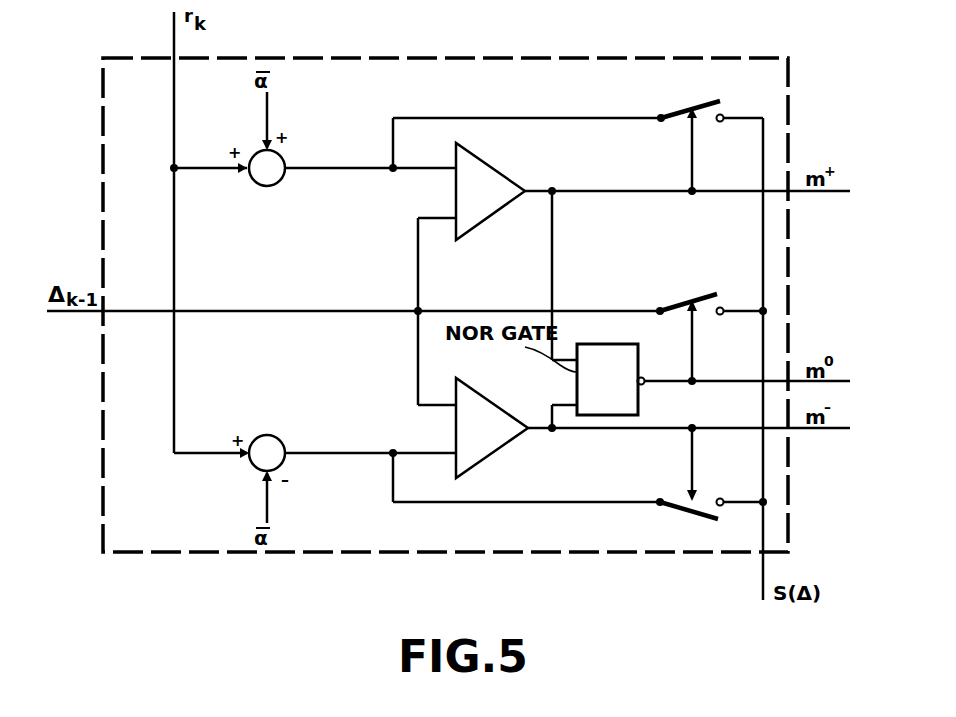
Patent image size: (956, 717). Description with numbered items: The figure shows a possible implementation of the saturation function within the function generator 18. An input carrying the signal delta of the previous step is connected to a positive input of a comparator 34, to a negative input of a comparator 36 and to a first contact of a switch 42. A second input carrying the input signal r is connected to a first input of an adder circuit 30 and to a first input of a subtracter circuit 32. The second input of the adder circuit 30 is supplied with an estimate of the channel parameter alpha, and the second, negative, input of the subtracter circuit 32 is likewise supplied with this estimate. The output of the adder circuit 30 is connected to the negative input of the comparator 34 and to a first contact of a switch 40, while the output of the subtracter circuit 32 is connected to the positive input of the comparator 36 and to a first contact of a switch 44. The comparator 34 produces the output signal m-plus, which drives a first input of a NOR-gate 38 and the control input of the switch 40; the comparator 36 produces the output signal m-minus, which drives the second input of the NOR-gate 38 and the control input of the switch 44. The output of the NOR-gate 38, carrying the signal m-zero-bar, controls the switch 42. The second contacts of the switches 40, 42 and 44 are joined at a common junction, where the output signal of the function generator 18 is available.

The function generator 18 is at (539, 590).
The adder circuit 30 is at (263, 185).
The subtracter circuit 32 is at (279, 437).
The comparator 34 is at (502, 213).
The comparator 36 is at (497, 405).
The NOR-gate 38 is at (640, 400).
The switch 40 is at (681, 110).
The switch 42 is at (682, 300).
The switch 44 is at (676, 512).